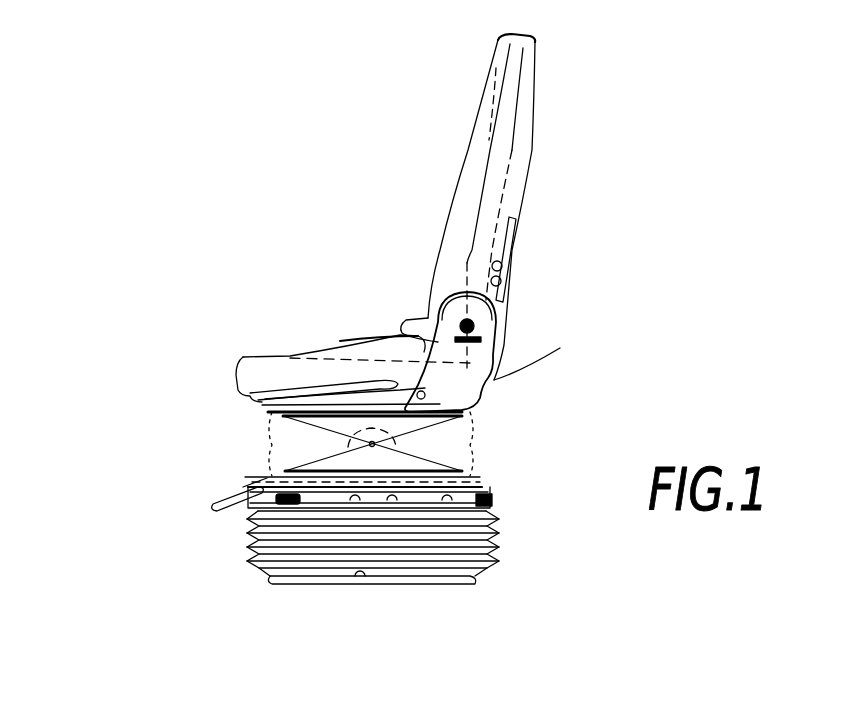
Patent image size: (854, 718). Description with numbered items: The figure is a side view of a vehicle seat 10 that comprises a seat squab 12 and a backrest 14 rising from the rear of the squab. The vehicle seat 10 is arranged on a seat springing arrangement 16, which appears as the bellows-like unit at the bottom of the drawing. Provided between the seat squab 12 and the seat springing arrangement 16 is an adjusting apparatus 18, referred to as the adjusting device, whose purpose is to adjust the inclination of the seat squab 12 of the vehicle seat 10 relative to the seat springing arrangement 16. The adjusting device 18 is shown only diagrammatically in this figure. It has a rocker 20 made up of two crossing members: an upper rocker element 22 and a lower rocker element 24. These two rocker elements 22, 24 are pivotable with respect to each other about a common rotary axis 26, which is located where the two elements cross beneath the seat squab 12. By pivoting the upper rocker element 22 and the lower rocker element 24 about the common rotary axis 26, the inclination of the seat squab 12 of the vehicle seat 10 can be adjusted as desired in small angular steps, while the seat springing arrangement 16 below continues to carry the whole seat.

The vehicle seat 10 is at (308, 168).
The seat squab 12 is at (256, 359).
The backrest 14 is at (464, 190).
The seat springing arrangement 16 is at (443, 566).
The adjusting apparatus 18 is at (222, 436).
The rocker 20 is at (480, 448).
The upper rocker element 22 is at (405, 429).
The lower rocker element 24 is at (470, 466).
The common rotary axis 26 is at (372, 448).